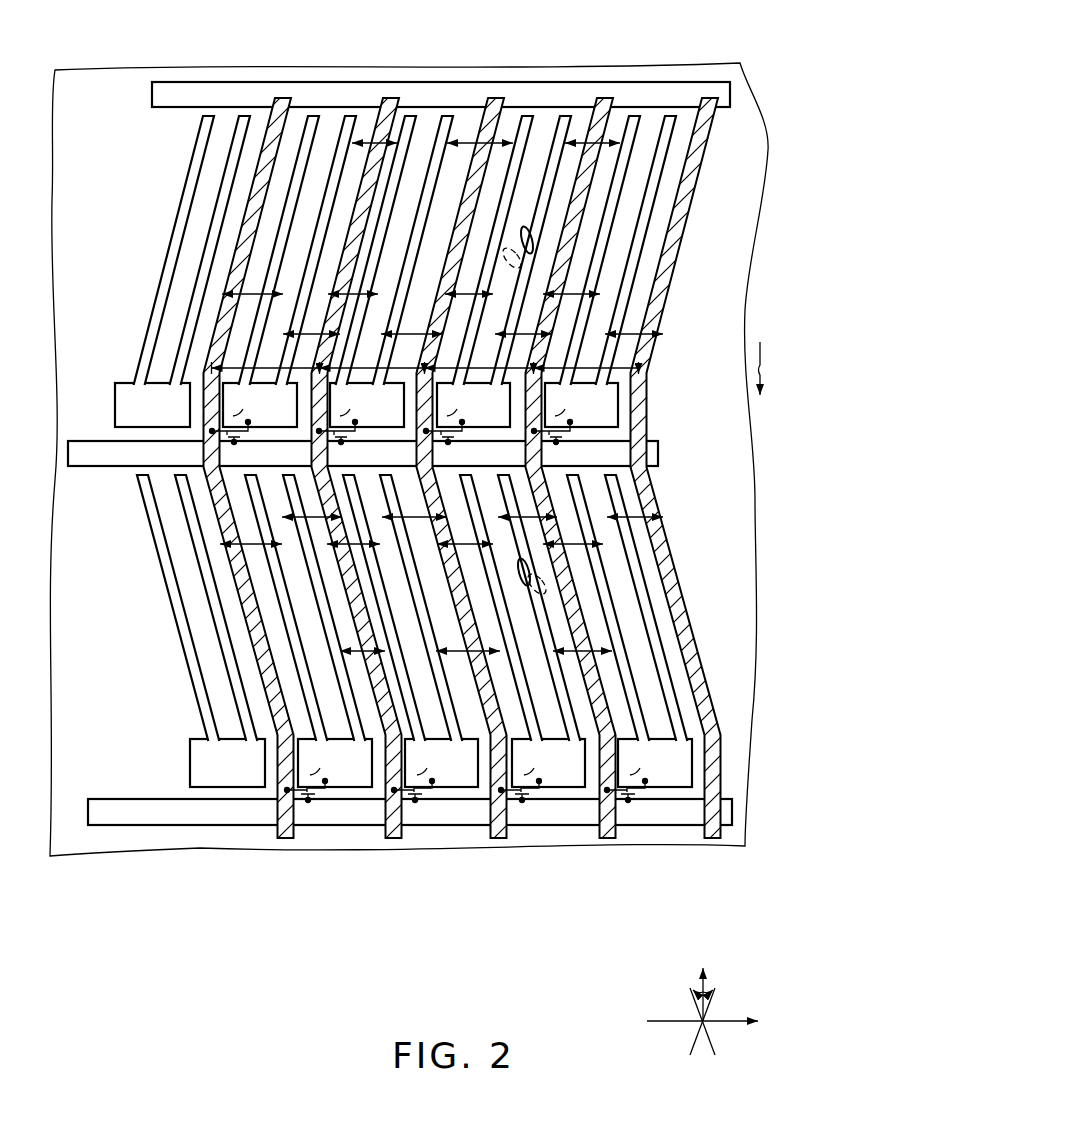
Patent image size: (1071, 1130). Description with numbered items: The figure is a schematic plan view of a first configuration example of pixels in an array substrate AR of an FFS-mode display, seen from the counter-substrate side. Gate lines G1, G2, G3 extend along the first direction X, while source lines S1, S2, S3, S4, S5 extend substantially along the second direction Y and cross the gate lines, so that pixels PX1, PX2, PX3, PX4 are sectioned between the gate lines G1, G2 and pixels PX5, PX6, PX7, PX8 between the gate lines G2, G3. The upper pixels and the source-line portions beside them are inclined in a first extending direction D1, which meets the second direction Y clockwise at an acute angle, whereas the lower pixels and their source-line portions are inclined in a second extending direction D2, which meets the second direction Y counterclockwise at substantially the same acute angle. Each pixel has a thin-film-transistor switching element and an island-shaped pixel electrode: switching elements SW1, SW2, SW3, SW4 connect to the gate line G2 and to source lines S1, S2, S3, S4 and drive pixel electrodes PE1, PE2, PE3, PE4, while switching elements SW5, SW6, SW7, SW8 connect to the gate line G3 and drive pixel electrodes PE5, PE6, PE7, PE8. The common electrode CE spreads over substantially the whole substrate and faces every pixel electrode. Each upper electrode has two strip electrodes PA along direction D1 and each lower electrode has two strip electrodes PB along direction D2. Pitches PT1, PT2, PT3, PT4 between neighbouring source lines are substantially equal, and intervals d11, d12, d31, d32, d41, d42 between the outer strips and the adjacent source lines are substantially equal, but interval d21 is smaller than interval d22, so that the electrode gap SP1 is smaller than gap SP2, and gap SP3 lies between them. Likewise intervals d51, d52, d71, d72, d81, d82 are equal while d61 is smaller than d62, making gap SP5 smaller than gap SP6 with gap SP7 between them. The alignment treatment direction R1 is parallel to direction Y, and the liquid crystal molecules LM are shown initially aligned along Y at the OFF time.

The gate line G1 is at (152, 92).
The gate line G2 is at (78, 468).
The gate line G3 is at (113, 798).
The source line S1 is at (283, 96).
The source line S2 is at (390, 96).
The source line S3 is at (496, 96).
The source line S4 is at (605, 96).
The source line S5 is at (710, 96).
The pixel PX1 is at (298, 226).
The pixel PX2 is at (405, 224).
The pixel PX3 is at (513, 226).
The pixel PX4 is at (622, 226).
The pixel PX5 is at (304, 698).
The pixel PX6 is at (410, 698).
The pixel PX7 is at (522, 698).
The pixel PX8 is at (629, 698).
The pixel electrode PE1 is at (283, 233).
The pixel electrode PE2 is at (385, 232).
The pixel electrode PE3 is at (498, 231).
The pixel electrode PE4 is at (604, 231).
The pixel electrode PE5 is at (308, 683).
The pixel electrode PE6 is at (410, 683).
The pixel electrode PE7 is at (522, 683).
The pixel electrode PE8 is at (629, 683).
The switching element SW1 is at (254, 414).
The switching element SW2 is at (361, 414).
The switching element SW3 is at (467, 414).
The switching element SW4 is at (575, 414).
The switching element SW5 is at (329, 771).
The switching element SW6 is at (435, 771).
The switching element SW7 is at (542, 771).
The switching element SW8 is at (649, 771).
The strip electrode PA is at (340, 166).
The strip electrode PB is at (325, 628).
The interval SP1 is at (372, 145).
The interval SP2 is at (479, 145).
The interval SP3 is at (592, 145).
The interval SP5 is at (368, 650).
The interval SP6 is at (473, 650).
The interval SP7 is at (580, 650).
The interval d11 is at (258, 292).
The interval d12 is at (306, 332).
The interval d21 is at (343, 292).
The interval d22 is at (408, 332).
The interval d31 is at (466, 292).
The interval d32 is at (518, 332).
The interval d41 is at (570, 296).
The interval d42 is at (632, 330).
The interval d51 is at (254, 546).
The interval d52 is at (306, 520).
The interval d61 is at (352, 546).
The interval d62 is at (410, 520).
The interval d71 is at (464, 546).
The interval d72 is at (510, 514).
The interval d81 is at (614, 515).
The interval d82 is at (597, 548).
The pitch PT1 is at (295, 348).
The pitch PT2 is at (372, 359).
The pitch PT3 is at (479, 359).
The pitch PT4 is at (590, 372).
The liquid crystal molecule LM is at (540, 240).
The array substrate AR is at (769, 130).
The common electrode CE is at (757, 479).
The alignment treatment direction R1 is at (788, 394).
The first direction X is at (711, 1020).
The second direction Y is at (702, 980).
The first extending direction D1 is at (713, 997).
The second extending direction D2 is at (692, 997).